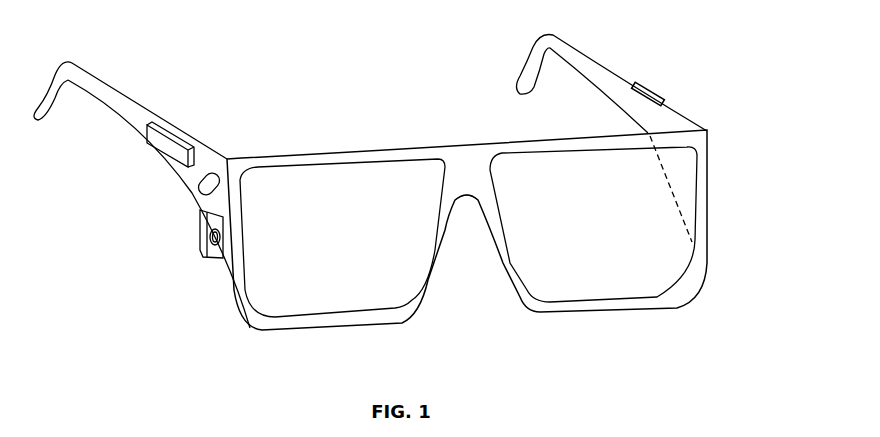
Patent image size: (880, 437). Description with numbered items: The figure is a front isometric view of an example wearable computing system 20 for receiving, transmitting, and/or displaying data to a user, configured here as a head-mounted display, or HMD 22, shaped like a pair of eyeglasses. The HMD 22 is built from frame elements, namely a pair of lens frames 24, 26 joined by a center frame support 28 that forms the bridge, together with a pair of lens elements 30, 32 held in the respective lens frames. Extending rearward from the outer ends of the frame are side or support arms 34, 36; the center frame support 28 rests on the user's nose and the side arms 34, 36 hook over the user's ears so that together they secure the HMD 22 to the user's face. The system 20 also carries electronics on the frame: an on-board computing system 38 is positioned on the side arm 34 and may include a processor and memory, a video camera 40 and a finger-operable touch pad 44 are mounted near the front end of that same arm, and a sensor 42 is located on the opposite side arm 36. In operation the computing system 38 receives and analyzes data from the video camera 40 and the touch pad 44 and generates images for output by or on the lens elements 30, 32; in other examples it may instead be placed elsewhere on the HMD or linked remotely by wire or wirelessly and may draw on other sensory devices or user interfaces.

The system 20 is at (708, 285).
The HMD 22 is at (350, 151).
The lens frame 24 is at (317, 158).
The lens frame 26 is at (540, 145).
The center frame support 28 is at (468, 165).
The lens element 30 is at (290, 297).
The lens element 32 is at (610, 283).
The side arm 34 is at (166, 129).
The side arm 36 is at (615, 70).
The on-board computing system 38 is at (163, 145).
The video camera 40 is at (200, 228).
The sensor 42 is at (652, 92).
The finger-operable touch pad 44 is at (200, 185).